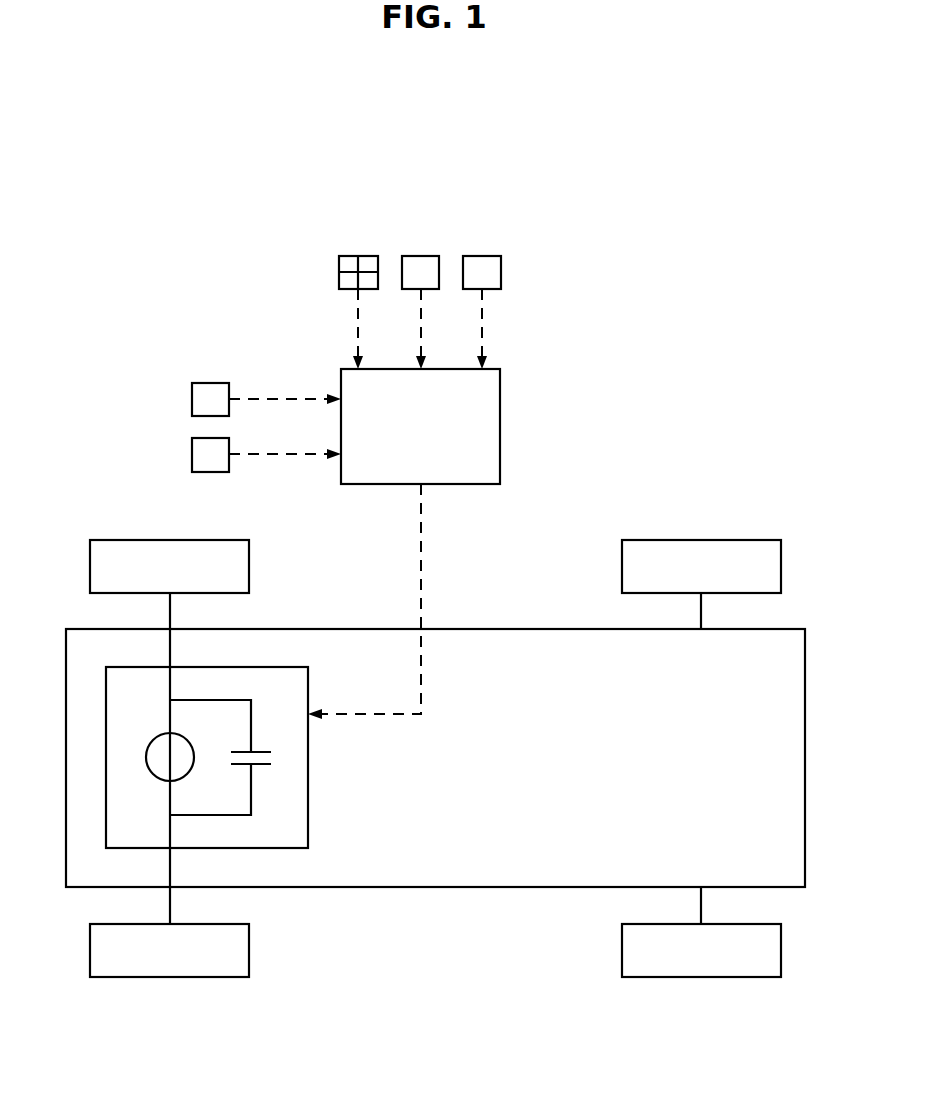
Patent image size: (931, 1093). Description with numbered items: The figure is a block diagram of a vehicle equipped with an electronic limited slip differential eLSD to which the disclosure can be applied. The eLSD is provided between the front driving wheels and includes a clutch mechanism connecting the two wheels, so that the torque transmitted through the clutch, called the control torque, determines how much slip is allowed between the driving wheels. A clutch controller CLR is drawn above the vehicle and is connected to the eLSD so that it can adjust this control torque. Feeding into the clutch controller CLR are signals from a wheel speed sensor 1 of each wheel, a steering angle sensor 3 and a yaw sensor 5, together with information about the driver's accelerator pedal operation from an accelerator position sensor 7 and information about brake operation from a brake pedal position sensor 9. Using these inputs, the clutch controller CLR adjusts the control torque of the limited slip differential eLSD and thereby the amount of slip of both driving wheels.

The wheel speed sensor 1 is at (351, 256).
The steering angle sensor 3 is at (192, 399).
The yaw sensor 5 is at (192, 454).
The accelerator position sensor 7 is at (420, 256).
The brake pedal position sensor 9 is at (484, 256).
The clutch controller CLR is at (500, 425).
The electronic limited slip differential eLSD is at (280, 848).